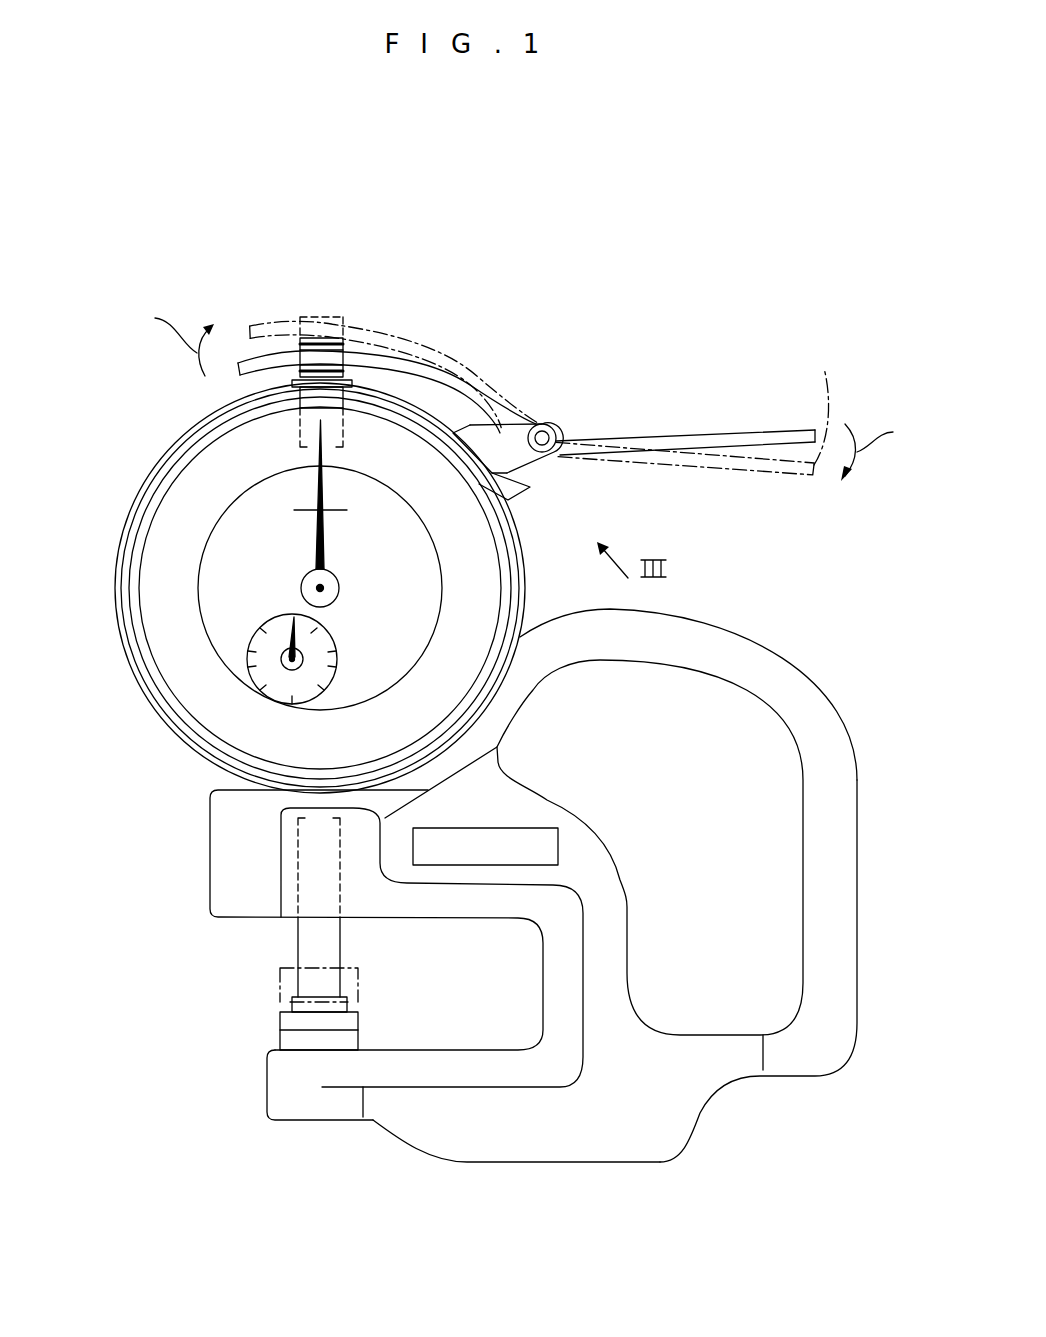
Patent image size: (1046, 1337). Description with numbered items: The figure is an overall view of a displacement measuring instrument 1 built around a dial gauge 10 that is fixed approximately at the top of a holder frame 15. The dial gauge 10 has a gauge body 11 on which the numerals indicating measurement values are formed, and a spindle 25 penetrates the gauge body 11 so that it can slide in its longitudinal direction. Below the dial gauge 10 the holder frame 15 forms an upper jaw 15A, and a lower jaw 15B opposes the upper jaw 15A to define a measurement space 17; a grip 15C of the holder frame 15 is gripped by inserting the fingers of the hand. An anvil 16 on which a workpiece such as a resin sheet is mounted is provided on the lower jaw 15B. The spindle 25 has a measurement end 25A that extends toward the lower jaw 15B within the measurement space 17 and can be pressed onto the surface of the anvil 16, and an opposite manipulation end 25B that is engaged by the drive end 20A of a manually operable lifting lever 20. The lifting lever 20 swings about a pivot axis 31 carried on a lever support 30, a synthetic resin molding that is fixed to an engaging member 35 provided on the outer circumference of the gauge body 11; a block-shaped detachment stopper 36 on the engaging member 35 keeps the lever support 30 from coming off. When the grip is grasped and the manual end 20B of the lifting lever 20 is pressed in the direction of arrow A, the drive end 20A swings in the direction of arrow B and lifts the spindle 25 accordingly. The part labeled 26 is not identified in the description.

The displacement measuring instrument 1 is at (580, 323).
The dial gauge 10 is at (158, 462).
The gauge body 11 is at (201, 689).
The holder frame 15 is at (772, 657).
The upper jaw 15A is at (228, 880).
The lower jaw 15B is at (423, 1072).
The grip 15C is at (833, 885).
The anvil 16 is at (290, 1040).
The measurement space 17 is at (392, 1014).
The lifting lever 20 is at (690, 438).
The drive end 20A is at (240, 363).
The manual end 20B is at (788, 430).
The spindle 25 is at (307, 956).
The measurement end 25A is at (283, 1021).
The manipulation end 25B is at (237, 393).
The clamp member 26 is at (322, 338).
The lever support 30 is at (540, 455).
The pivot axis 31 is at (526, 424).
The engaging member 35 is at (460, 432).
The detachment stopper 36 is at (515, 488).